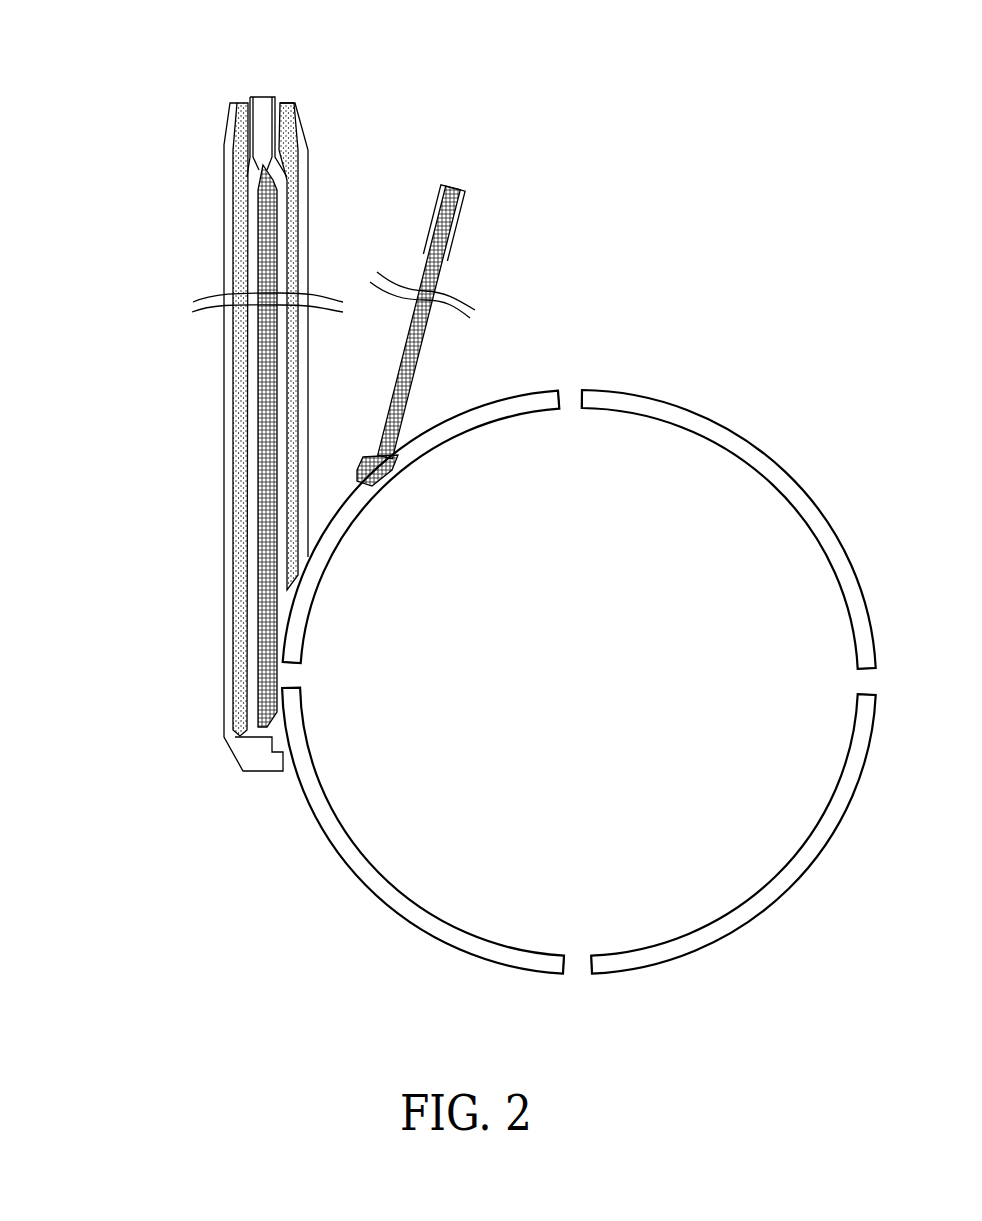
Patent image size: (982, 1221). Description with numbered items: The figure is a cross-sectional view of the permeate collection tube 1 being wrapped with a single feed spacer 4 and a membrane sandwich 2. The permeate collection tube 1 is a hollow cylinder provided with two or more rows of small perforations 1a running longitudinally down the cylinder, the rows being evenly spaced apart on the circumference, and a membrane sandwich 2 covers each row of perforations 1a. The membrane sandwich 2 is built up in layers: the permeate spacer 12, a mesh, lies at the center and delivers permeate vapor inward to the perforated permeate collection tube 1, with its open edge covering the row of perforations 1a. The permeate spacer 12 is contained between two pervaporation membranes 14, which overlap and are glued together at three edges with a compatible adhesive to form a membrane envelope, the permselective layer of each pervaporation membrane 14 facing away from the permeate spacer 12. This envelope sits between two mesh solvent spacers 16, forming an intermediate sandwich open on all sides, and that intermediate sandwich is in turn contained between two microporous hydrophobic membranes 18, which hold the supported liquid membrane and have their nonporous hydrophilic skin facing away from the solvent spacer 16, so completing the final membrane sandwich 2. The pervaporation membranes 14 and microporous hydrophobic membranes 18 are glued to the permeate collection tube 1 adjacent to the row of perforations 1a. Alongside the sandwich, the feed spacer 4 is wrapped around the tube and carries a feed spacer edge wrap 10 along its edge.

The permeate collection tube 1 is at (372, 885).
The permeate collection tube perforations 1a is at (577, 952).
The membrane sandwich 2 is at (230, 62).
The feed spacer 4 is at (420, 352).
The feed spacer edge wrap 10 is at (502, 318).
The permeate spacer 12 is at (268, 182).
The pervaporation membrane 14 is at (277, 219).
The solvent spacer 16 is at (297, 373).
The microporous hydrophobic membrane 18 is at (303, 460).